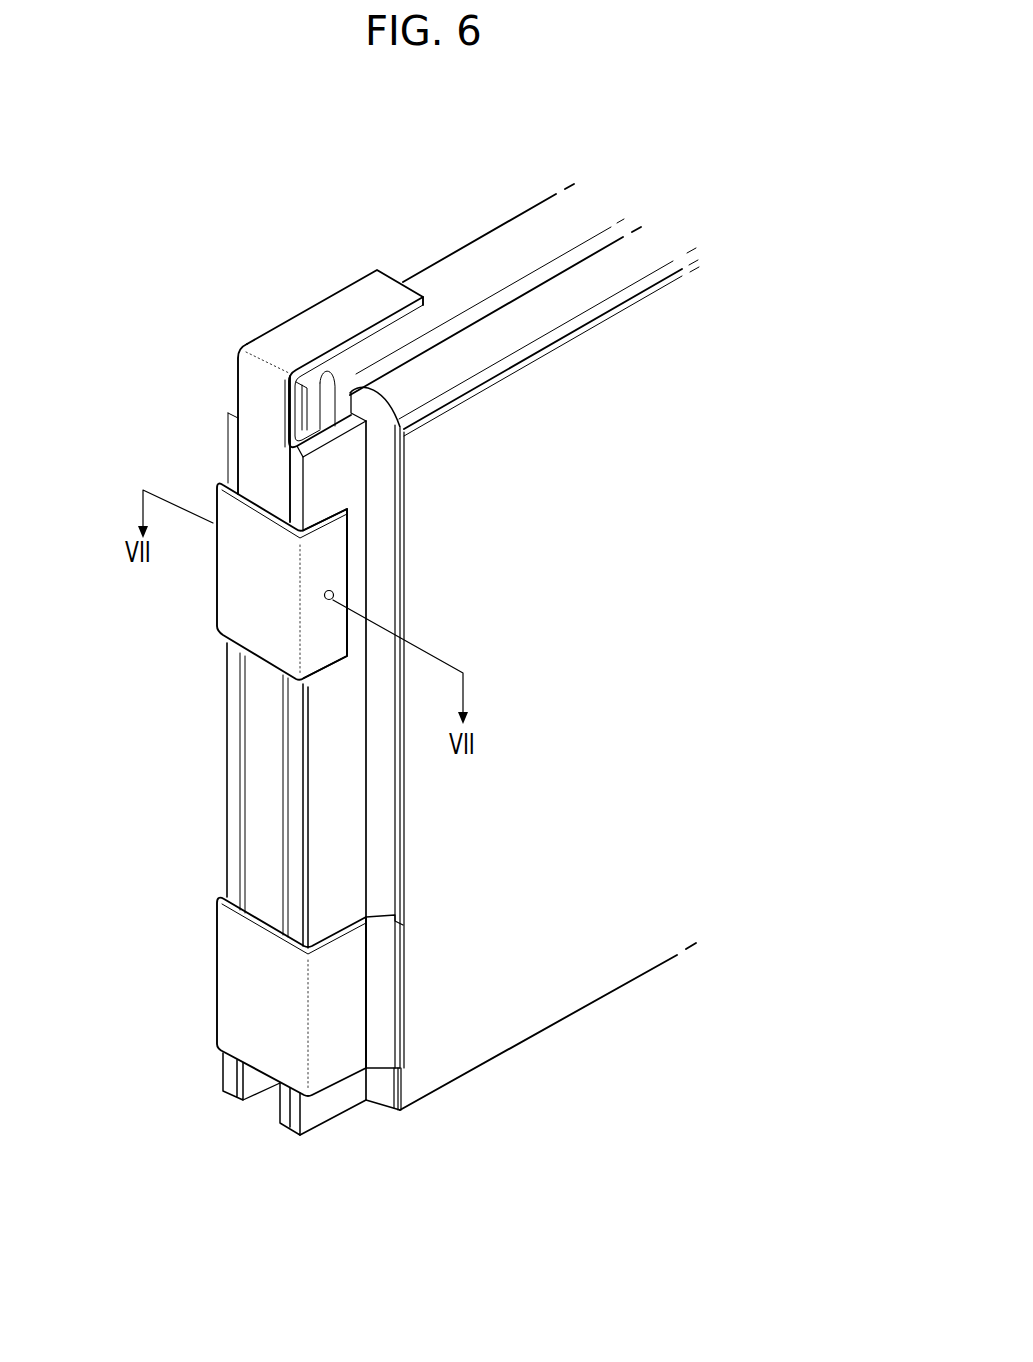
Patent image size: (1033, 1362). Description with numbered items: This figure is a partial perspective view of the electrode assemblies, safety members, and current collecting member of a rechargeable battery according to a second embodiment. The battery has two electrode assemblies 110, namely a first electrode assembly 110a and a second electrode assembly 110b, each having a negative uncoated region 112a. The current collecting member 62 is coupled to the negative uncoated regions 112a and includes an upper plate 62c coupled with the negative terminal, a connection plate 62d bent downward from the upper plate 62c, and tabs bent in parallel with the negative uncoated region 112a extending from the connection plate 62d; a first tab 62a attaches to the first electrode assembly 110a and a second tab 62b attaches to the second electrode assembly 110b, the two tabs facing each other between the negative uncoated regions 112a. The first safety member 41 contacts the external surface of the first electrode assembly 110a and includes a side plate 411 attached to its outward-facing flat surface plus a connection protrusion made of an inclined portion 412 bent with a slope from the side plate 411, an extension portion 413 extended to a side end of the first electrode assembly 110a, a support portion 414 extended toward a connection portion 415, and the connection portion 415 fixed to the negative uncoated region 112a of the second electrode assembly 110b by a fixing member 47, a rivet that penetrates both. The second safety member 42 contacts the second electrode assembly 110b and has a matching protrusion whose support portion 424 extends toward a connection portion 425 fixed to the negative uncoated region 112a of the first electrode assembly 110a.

The first safety member 41 is at (476, 772).
The side plate 411 is at (548, 1026).
The inclined portion 412 is at (472, 1058).
The extension portion 413 is at (394, 1102).
The support portion 414 is at (255, 997).
The connection portion 415 is at (262, 889).
The second safety member 42 is at (299, 790).
The support portion 424 is at (227, 582).
The connection portion 425 is at (397, 593).
The fixing member 47 is at (402, 590).
The current collecting member 62 is at (273, 699).
The first tab 62a is at (269, 1143).
The second tab 62b is at (215, 702).
The upper plate 62c is at (331, 313).
The connection plate 62d is at (212, 432).
The electrode assembly 110 is at (524, 273).
The first electrode assembly 110a is at (524, 293).
The second electrode assembly 110b is at (490, 262).
The negative uncoated region 112a is at (269, 1111).